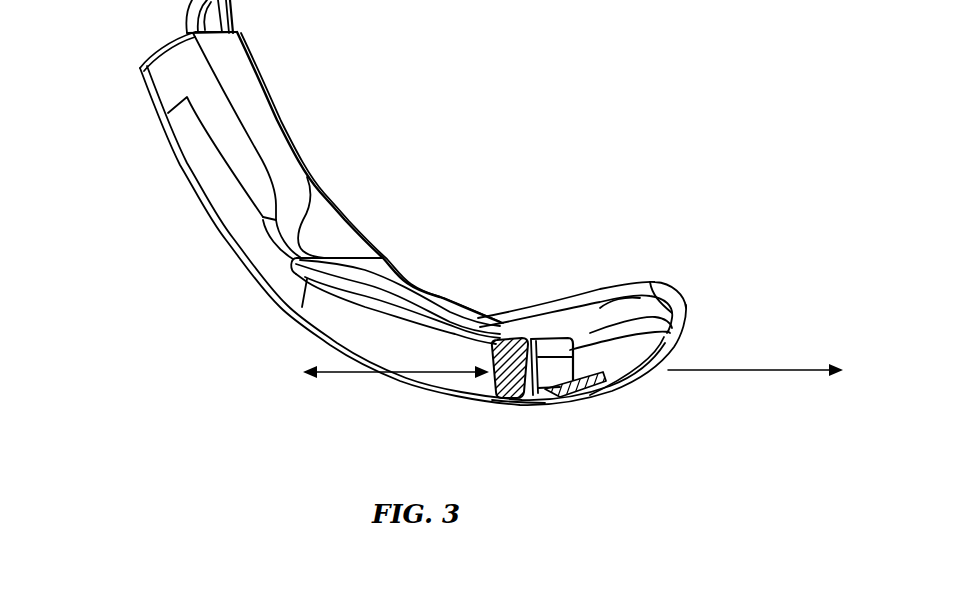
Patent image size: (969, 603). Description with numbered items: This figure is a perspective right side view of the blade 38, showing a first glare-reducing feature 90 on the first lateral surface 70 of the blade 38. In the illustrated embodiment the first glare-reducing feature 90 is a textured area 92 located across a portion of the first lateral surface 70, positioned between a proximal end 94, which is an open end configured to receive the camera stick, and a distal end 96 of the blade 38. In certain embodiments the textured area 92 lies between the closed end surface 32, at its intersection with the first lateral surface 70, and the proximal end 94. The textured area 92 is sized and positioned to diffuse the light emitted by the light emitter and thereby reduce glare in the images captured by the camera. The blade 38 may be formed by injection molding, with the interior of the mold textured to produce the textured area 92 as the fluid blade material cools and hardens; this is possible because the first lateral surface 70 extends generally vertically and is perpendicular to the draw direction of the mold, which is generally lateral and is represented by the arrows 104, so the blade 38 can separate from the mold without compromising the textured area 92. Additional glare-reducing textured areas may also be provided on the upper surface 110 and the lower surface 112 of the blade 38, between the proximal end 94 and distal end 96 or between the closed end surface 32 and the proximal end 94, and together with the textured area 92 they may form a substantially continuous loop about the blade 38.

The closed end surface 32 is at (548, 370).
The blade 38 is at (488, 152).
The first lateral surface 70 is at (452, 350).
The first glare-reducing feature 90 is at (478, 382).
The textured area 92 is at (517, 398).
The proximal end 94 is at (138, 40).
The distal end 96 is at (697, 330).
The arrows 104 is at (337, 375).
The upper surface 110 is at (408, 287).
The lower surface 112 is at (404, 402).